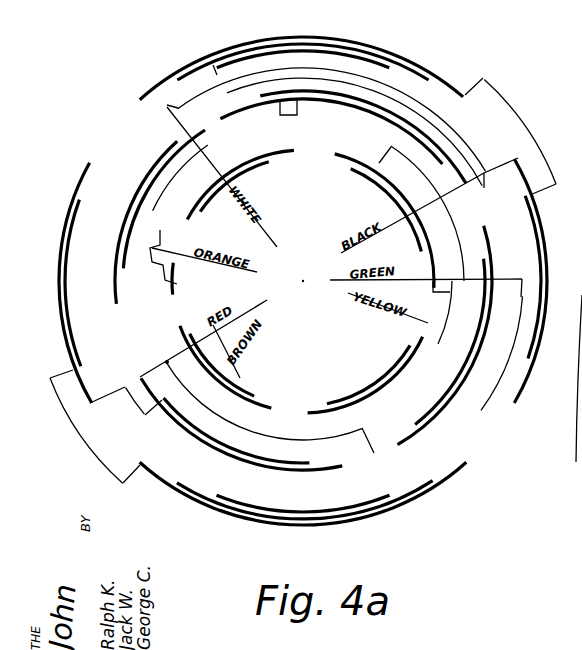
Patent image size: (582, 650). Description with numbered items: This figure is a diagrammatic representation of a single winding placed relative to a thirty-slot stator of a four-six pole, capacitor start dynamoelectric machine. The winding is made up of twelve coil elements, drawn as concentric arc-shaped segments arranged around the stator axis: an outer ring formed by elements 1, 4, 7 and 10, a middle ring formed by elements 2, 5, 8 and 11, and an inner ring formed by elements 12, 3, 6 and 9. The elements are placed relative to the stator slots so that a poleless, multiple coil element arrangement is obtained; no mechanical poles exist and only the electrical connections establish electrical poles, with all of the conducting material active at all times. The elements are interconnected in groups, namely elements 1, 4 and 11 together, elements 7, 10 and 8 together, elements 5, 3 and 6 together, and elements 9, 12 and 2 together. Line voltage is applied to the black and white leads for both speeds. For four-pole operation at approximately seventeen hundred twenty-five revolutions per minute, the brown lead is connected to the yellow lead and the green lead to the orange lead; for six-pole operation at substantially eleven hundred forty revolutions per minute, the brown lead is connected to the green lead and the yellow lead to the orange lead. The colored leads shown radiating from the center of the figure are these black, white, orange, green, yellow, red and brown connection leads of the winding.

The winding element 1 is at (301, 55).
The winding element 2 is at (343, 137).
The winding element 3 is at (384, 221).
The winding element 4 is at (540, 281).
The winding element 5 is at (447, 335).
The winding element 6 is at (365, 375).
The winding element 7 is at (303, 507).
The winding element 8 is at (241, 431).
The winding element 9 is at (213, 335).
The winding element 10 is at (61, 283).
The winding element 11 is at (156, 217).
The winding element 12 is at (240, 180).